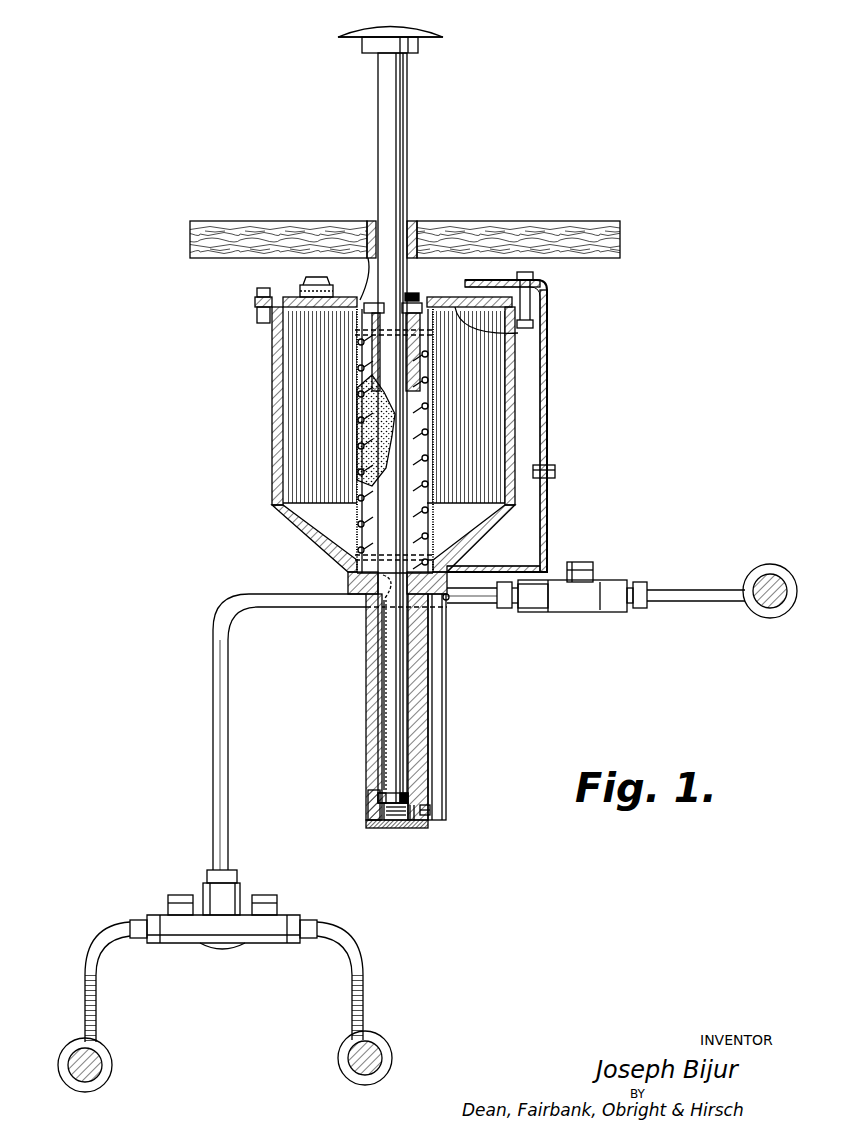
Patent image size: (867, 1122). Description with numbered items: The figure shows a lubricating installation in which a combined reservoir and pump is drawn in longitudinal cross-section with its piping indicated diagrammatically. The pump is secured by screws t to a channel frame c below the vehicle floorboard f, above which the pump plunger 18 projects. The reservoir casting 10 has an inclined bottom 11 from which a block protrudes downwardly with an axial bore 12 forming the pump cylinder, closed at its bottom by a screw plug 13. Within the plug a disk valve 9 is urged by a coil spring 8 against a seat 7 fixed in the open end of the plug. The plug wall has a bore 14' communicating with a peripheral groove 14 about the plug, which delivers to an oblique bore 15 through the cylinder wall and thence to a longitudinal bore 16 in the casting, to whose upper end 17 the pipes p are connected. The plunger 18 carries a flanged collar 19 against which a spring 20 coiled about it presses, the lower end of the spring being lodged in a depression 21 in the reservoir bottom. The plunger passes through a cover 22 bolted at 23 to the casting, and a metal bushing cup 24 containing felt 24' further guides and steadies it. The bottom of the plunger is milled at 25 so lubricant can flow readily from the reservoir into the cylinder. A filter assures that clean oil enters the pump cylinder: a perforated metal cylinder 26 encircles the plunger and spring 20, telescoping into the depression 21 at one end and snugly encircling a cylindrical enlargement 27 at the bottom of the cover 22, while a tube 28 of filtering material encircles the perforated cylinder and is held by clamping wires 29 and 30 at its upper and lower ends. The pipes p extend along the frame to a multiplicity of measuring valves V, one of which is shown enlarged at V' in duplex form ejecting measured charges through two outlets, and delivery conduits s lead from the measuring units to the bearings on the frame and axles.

The pump plunger 18 is at (392, 178).
The vehicle floorboard f is at (534, 235).
The metal bushing cup 24 is at (419, 253).
The felt 24' is at (445, 282).
The cylindrical enlargement 27 is at (366, 262).
The reservoir casting 10 is at (274, 468).
The bolt 23 is at (256, 299).
The cover 22 is at (548, 338).
The inclined bottom 11 is at (322, 528).
The clamping wire 30 is at (470, 545).
The channel frame c is at (548, 430).
The screw t is at (558, 472).
The perforated metal cylinder 26 is at (425, 440).
The spring 20 is at (420, 486).
The flanged collar 19 is at (425, 358).
The clamping wire 29 is at (356, 334).
The tube of filtering material 28 is at (370, 412).
The depression 21 is at (370, 592).
The milled portion 25 is at (386, 602).
The upper end of longitudinal bore 17 is at (449, 600).
The disk valve 9 is at (398, 792).
The longitudinal bore 16 is at (434, 685).
The axial bore 12 is at (398, 667).
The screw plug 13 is at (382, 805).
The peripheral groove 14 is at (358, 820).
The bore 14' is at (419, 843).
The oblique bore 15 is at (432, 812).
The seat 7 is at (446, 790).
The coil spring 8 is at (400, 828).
The pipe p is at (226, 747).
The delivery conduit s is at (717, 600).
The measuring valve V is at (572, 614).
The duplex measuring valve V' is at (223, 944).